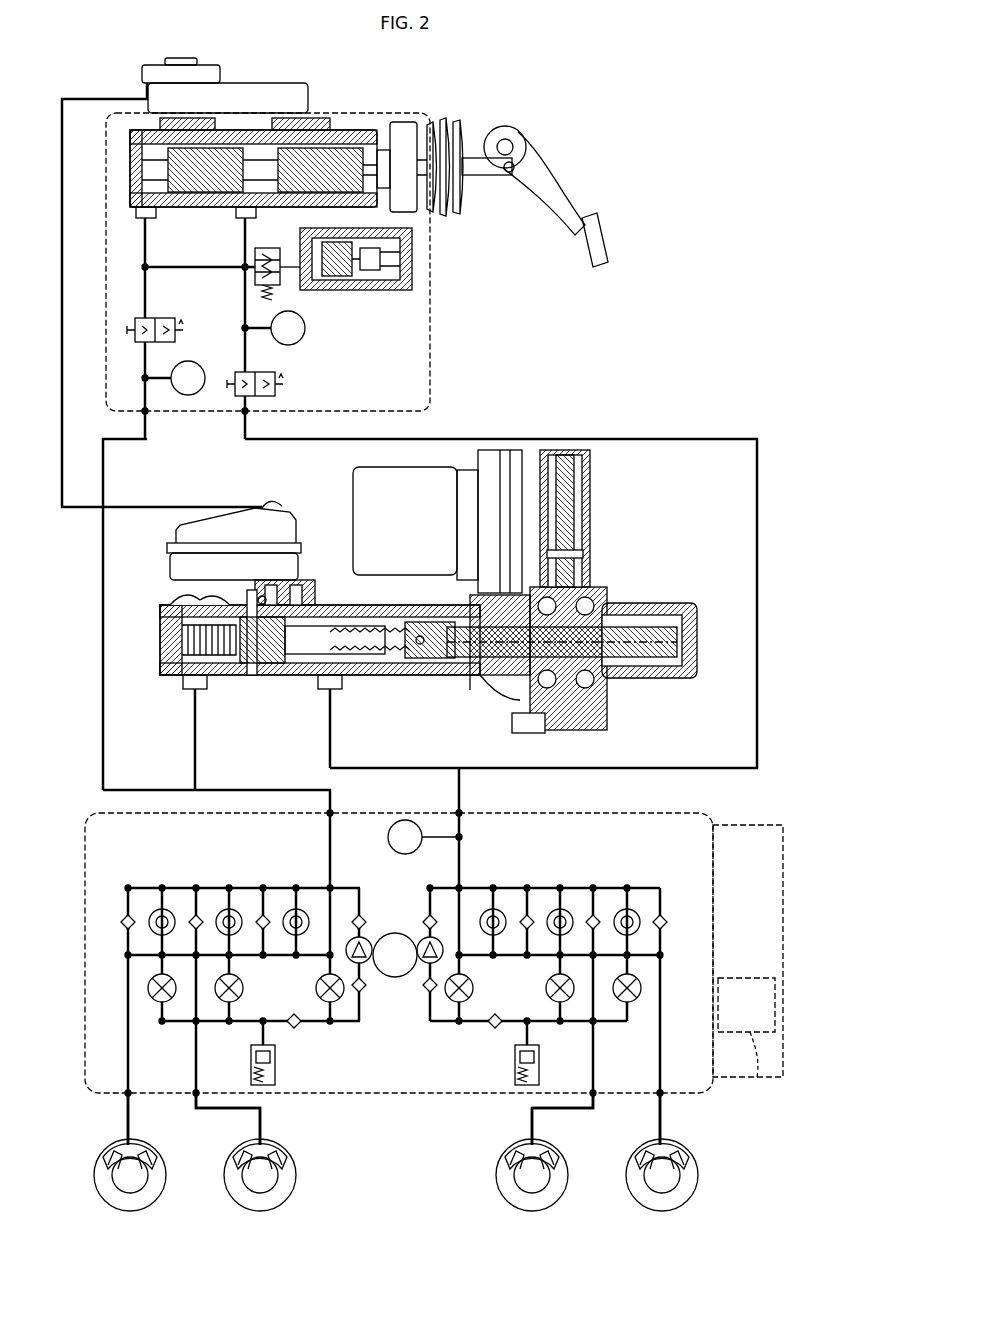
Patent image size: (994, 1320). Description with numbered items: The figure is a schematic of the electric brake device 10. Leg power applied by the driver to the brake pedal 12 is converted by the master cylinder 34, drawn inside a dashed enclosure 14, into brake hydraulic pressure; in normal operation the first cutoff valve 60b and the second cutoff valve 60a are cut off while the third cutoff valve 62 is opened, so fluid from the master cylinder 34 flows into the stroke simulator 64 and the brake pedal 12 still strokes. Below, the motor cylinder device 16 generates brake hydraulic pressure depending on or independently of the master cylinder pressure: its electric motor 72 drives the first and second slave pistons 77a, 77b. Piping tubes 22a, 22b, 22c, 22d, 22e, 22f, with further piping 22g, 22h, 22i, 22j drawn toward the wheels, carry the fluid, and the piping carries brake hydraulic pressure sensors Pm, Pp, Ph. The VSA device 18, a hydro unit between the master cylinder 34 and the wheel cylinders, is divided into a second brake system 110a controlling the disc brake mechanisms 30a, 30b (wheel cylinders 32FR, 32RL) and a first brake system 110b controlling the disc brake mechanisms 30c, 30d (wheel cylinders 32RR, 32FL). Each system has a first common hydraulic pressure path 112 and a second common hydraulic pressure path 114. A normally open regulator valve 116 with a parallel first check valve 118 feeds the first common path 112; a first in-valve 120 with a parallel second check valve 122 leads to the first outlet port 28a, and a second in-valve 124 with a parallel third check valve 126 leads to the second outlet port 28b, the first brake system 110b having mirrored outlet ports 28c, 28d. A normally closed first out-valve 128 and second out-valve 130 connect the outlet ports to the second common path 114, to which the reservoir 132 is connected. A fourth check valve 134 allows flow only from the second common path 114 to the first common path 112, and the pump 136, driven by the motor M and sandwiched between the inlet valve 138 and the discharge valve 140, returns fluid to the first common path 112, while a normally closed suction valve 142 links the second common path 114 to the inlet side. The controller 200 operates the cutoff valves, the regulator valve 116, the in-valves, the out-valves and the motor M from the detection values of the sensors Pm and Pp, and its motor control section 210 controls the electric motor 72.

The electric brake device 10 is at (545, 90).
The brake pedal 12 is at (607, 240).
The master cylinder unit 14 is at (432, 312).
The motor cylinder device 16 is at (598, 470).
The VSA device 18 is at (612, 808).
The piping tube 22a is at (757, 520).
The piping tube 22b is at (342, 768).
The piping tube 22c is at (462, 785).
The piping tube 22d is at (103, 603).
The piping tube 22e is at (195, 745).
The piping tube 22f is at (253, 790).
The fluid passage 22g is at (665, 1116).
The fluid passage 22h is at (530, 1118).
The fluid passage 22i is at (262, 1116).
The fluid passage 22j is at (126, 1120).
The first outlet port 28a is at (663, 1096).
The second outlet port 28b is at (595, 1096).
The brake line 28c is at (196, 1096).
The brake line 28d is at (125, 1096).
The disc brake mechanism 30a is at (702, 1203).
The disc brake mechanism 30b is at (572, 1203).
The disc brake mechanism 30c is at (300, 1203).
The disc brake mechanism 30d is at (170, 1203).
The wheel cylinder 32FL is at (156, 1147).
The wheel cylinder 32RR is at (286, 1147).
The wheel cylinder 32RL is at (558, 1147).
The wheel cylinder 32FR is at (688, 1147).
The master cylinder 34 is at (338, 122).
The second cutoff valve 60a is at (275, 372).
The first cutoff valve 60b is at (158, 318).
The third cutoff valve 62 is at (278, 248).
The stroke simulator 64 is at (425, 240).
The electric motor 72 is at (412, 529).
The first slave piston 77a is at (472, 690).
The second slave piston 77b is at (320, 690).
The second brake system 110a is at (660, 880).
The first brake system 110b is at (130, 880).
The first common hydraulic pressure path 112 is at (208, 885).
The second common hydraulic pressure path 114 is at (206, 1024).
The regulator valve 116 is at (296, 908).
The first check valve 118 is at (263, 912).
The first in-valve 120 is at (162, 908).
The second check valve 122 is at (121, 912).
The second in-valve 124 is at (229, 908).
The third check valve 126 is at (196, 912).
The first out-valve 128 is at (162, 1002).
The second out-valve 130 is at (244, 988).
The reservoir 132 is at (278, 1076).
The fourth check valve 134 is at (294, 1028).
The pump 136 is at (426, 963).
The inlet valve 138 is at (426, 990).
The discharge valve 140 is at (426, 912).
The suction valve 142 is at (335, 1022).
The controller 200 is at (752, 826).
The motor control section 210 is at (757, 1077).
The brake hydraulic pressure sensor Pm is at (288, 328).
The brake hydraulic pressure sensor Pp is at (188, 378).
The brake hydraulic pressure sensor Ph is at (423, 837).
The motor M is at (395, 955).